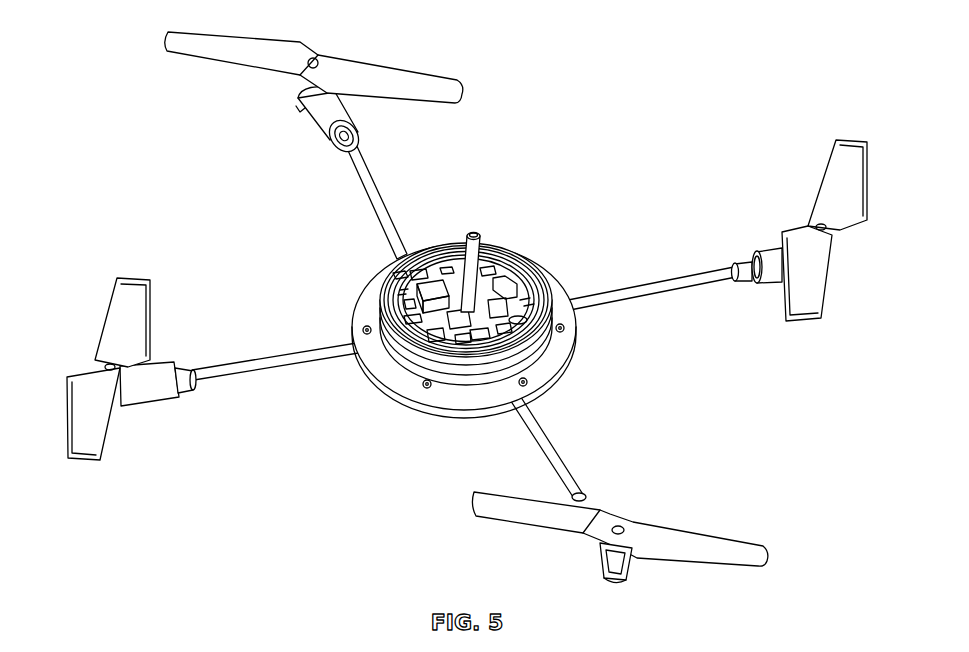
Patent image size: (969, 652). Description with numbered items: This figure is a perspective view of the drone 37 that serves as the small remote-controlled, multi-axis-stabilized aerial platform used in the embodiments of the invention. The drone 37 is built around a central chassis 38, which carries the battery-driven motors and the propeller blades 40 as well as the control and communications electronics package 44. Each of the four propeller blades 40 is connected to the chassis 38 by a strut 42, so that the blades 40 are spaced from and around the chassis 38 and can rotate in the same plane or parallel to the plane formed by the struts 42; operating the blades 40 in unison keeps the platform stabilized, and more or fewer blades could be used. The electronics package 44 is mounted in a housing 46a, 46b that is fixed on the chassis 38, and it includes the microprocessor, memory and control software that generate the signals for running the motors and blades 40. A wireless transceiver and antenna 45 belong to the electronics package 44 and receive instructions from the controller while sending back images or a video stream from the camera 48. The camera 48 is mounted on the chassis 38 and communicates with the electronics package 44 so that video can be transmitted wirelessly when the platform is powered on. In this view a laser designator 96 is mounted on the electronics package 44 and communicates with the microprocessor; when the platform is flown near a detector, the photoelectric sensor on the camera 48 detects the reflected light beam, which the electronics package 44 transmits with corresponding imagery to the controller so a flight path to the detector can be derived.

The drone 37 is at (398, 252).
The chassis 38 is at (502, 338).
The propeller blades 40 is at (438, 88).
The strut 42 is at (383, 188).
The control and communications electronics package 44 is at (409, 384).
The wireless transceiver and antenna 45 is at (522, 266).
The housing 46a is at (468, 388).
The housing 46b is at (379, 293).
The camera 48 is at (498, 258).
The laser designator 96 is at (479, 232).